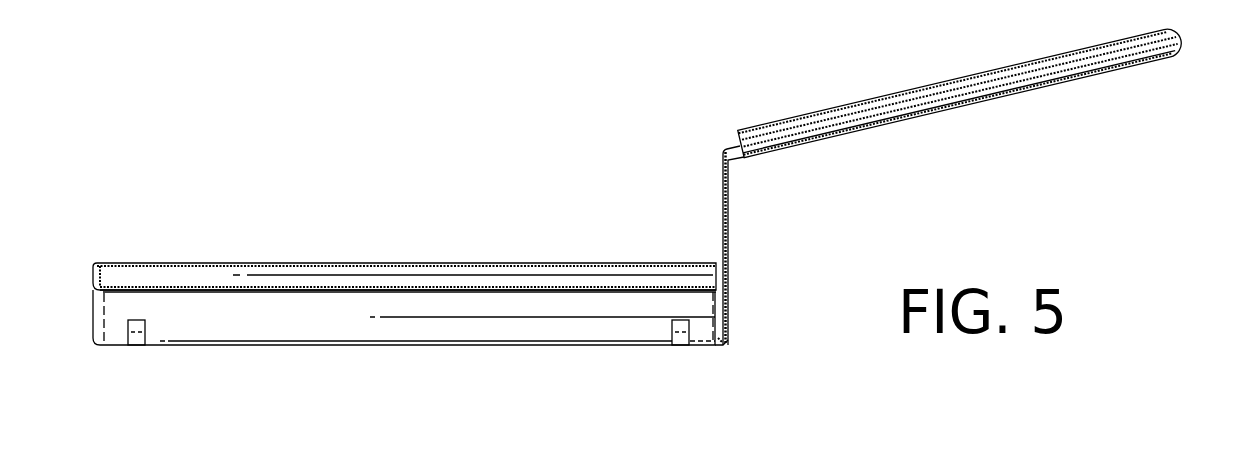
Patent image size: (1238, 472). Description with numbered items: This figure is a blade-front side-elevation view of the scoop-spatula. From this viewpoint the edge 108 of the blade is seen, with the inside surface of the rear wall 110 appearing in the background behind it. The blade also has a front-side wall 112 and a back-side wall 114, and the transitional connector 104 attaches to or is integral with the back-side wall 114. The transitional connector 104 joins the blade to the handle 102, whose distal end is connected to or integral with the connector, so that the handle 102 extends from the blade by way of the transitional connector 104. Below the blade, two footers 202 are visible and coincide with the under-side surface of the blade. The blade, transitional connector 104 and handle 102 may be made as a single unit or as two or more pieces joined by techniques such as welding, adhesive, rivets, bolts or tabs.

The handle 102 is at (1043, 88).
The transitional connector 104 is at (728, 230).
The edge 108 is at (168, 289).
The rear wall 110 is at (333, 263).
The front-side wall 112 is at (93, 302).
The back-side wall 114 is at (719, 332).
The footers 202 is at (136, 347).